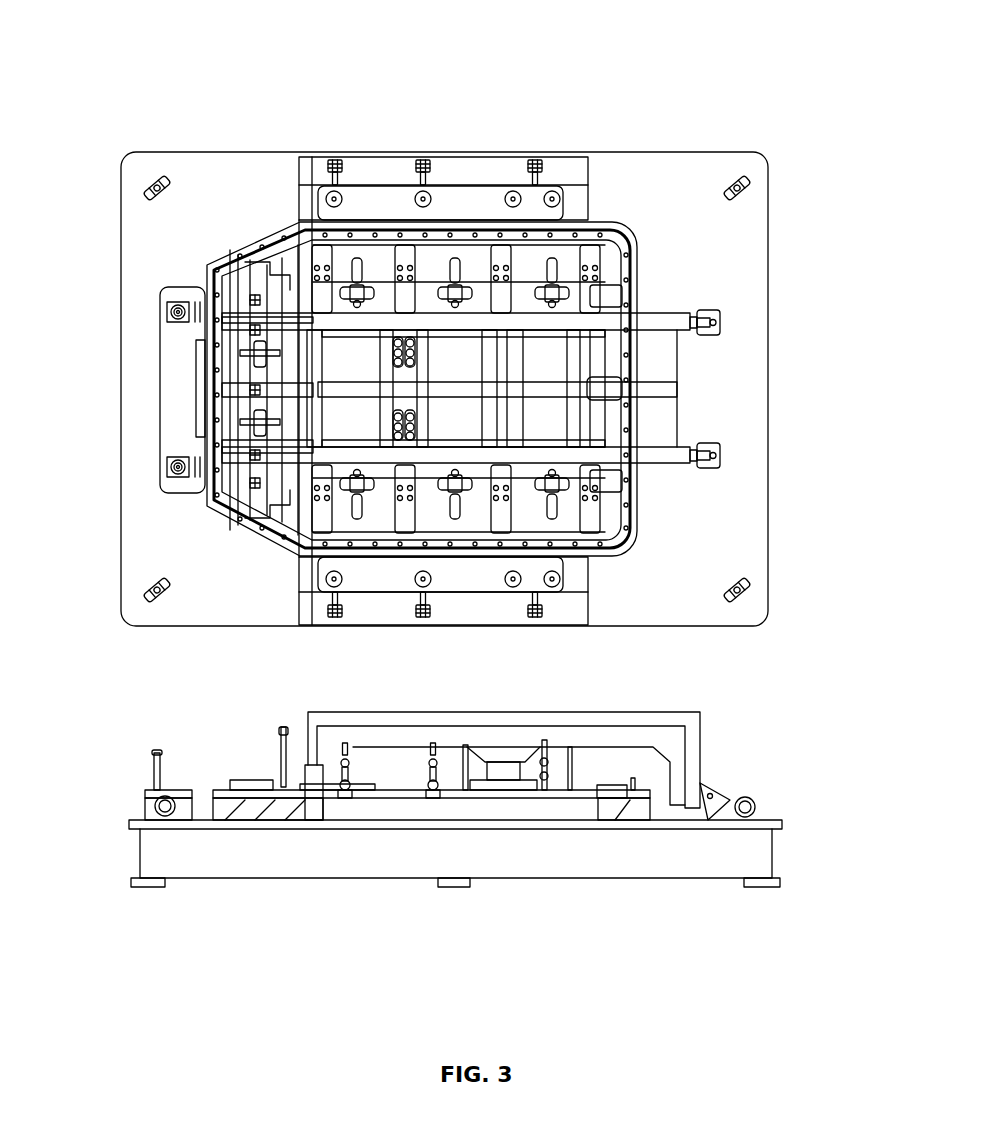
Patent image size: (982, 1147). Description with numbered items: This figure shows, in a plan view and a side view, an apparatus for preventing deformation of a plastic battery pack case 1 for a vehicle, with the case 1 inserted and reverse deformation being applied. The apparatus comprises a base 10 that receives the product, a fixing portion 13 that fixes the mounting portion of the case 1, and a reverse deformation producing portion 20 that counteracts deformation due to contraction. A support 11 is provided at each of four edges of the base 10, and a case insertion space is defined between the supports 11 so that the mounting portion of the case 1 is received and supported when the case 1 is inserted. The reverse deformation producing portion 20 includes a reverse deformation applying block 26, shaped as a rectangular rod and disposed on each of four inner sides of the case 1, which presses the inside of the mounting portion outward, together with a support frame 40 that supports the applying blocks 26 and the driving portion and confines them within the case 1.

The case 1 is at (232, 905).
The base 10 is at (258, 114).
The support 11 is at (455, 168).
The fixing portion 13 is at (420, 158).
The reverse deformation producing portion 20 is at (621, 193).
The reverse deformation applying block 26 is at (565, 245).
The support frame 40 is at (742, 729).